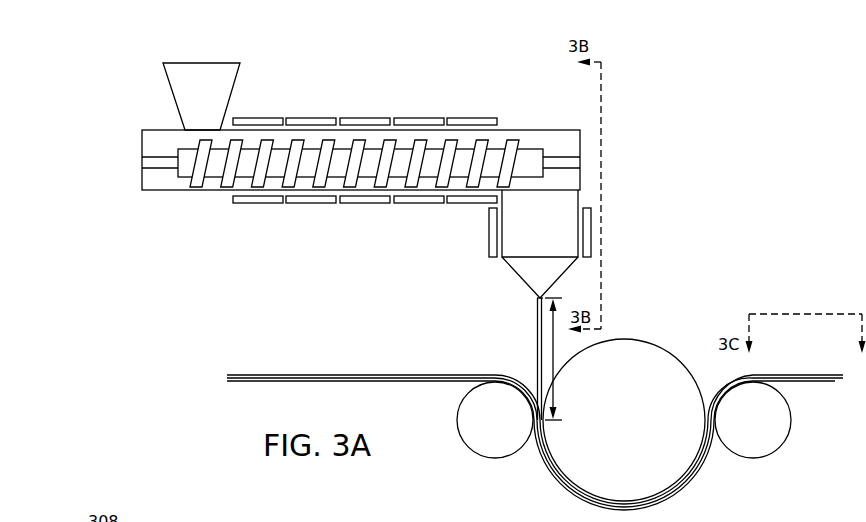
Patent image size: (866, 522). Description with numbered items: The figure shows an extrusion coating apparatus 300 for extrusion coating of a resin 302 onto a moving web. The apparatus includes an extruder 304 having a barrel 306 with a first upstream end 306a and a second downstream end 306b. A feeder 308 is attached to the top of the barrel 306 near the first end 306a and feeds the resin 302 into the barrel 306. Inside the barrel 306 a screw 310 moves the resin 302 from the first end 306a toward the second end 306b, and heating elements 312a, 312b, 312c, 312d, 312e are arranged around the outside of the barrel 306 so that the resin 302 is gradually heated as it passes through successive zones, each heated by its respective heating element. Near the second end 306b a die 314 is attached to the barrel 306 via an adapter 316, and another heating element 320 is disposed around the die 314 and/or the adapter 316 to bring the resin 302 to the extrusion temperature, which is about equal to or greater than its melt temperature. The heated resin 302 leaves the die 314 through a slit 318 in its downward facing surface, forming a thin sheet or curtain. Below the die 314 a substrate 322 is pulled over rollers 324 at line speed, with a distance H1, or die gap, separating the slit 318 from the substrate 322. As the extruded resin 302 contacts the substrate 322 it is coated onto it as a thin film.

The extrusion coating apparatus 300 is at (720, 68).
The resin 302 is at (536, 352).
The extruder 304 is at (126, 144).
The barrel 306 is at (206, 192).
The first upstream end 306a is at (141, 178).
The second downstream end 306b is at (582, 142).
The feeder 308 is at (210, 63).
The screw 310 is at (187, 172).
The heating element 312a is at (262, 118).
The heating element 312b is at (312, 118).
The heating element 312c is at (368, 118).
The heating element 312d is at (416, 118).
The heating element 312e is at (474, 118).
The die 314 is at (513, 270).
The adapter 316 is at (582, 197).
The slit 318 is at (537, 299).
The heating element 320 is at (489, 236).
The substrate 322 is at (297, 375).
The rollers 324 is at (479, 430).
The distance H1 is at (553, 348).